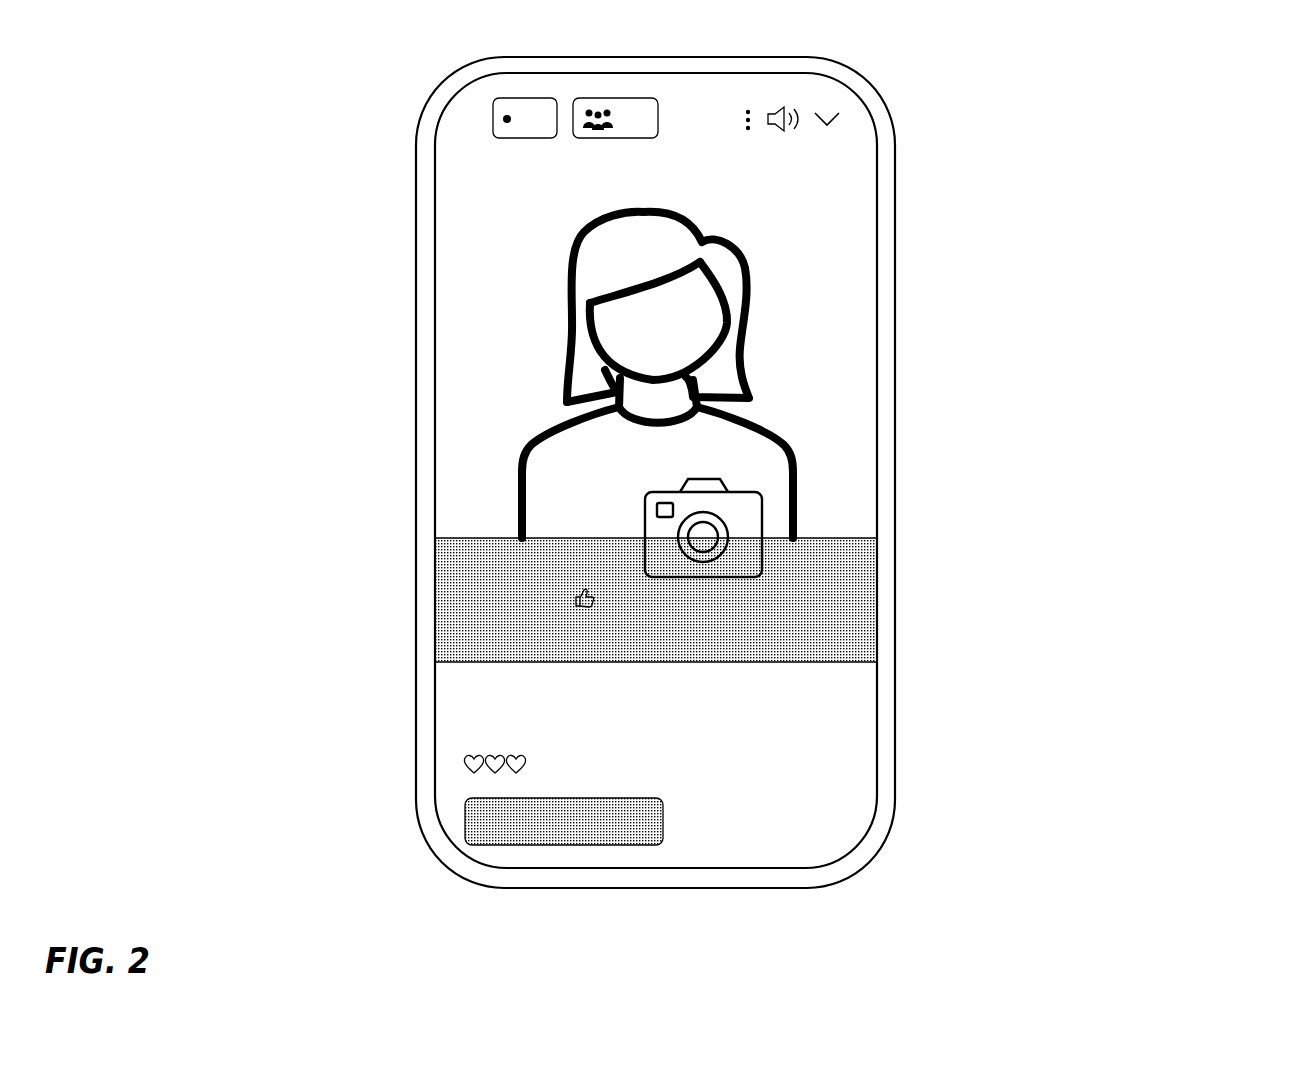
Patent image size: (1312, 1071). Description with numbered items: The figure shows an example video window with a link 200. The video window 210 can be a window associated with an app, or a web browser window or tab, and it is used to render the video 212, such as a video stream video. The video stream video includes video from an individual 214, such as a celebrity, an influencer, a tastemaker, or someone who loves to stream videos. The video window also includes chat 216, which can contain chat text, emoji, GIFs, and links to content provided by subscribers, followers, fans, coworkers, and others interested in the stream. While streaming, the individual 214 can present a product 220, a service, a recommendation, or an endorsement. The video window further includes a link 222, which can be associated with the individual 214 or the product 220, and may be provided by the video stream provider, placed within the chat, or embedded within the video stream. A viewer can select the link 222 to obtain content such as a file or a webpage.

The example video window with a link 200 is at (1192, 117).
The video window 210 is at (435, 172).
The video 212 is at (505, 258).
The individual 214 is at (570, 340).
The chat 216 is at (447, 672).
The product 220 is at (775, 527).
The link 222 is at (843, 770).